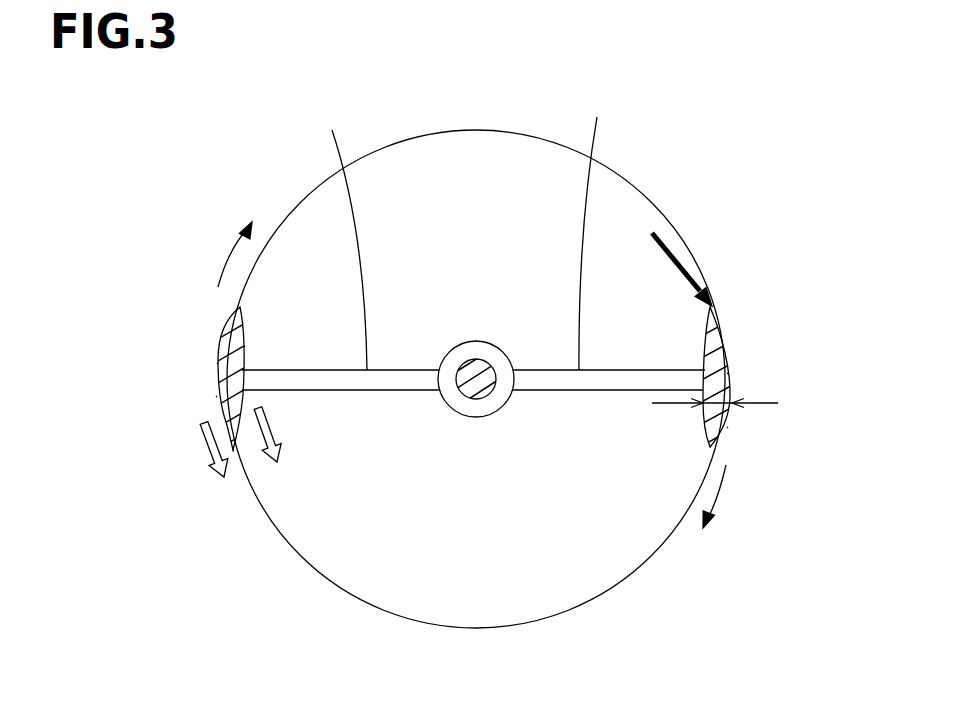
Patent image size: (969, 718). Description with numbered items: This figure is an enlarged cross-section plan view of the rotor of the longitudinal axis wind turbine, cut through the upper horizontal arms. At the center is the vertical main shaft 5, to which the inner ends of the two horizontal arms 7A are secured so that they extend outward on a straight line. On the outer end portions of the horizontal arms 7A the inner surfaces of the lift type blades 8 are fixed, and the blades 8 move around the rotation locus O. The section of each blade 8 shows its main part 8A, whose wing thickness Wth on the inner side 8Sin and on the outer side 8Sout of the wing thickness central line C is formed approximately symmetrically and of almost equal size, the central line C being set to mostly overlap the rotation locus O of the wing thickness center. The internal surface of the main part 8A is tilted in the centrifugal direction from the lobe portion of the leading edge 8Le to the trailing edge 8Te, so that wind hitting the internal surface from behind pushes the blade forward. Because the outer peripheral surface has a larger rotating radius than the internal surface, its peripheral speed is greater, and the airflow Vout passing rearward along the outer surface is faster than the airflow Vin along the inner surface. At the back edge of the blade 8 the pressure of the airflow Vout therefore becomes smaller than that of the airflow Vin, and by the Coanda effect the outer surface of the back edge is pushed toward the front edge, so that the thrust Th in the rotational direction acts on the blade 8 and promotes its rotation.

The vertical main shaft 5 is at (478, 393).
The horizontal arm 7A is at (465, 226).
The rotation locus O is at (612, 171).
The lift type blade 8 is at (218, 328).
The leading edge 8Le is at (238, 309).
The trailing edge 8Te is at (234, 450).
The main part 8A is at (218, 352).
The wing thickness central line C is at (217, 363).
The inner side 8Sin is at (244, 346).
The outer side 8Sout is at (216, 396).
The airflow on the inner peripheral surface Vin is at (299, 434).
The airflow on the outer peripheral surface Vout is at (175, 458).
The thrust Th is at (686, 270).
The wing thickness Wth is at (751, 407).